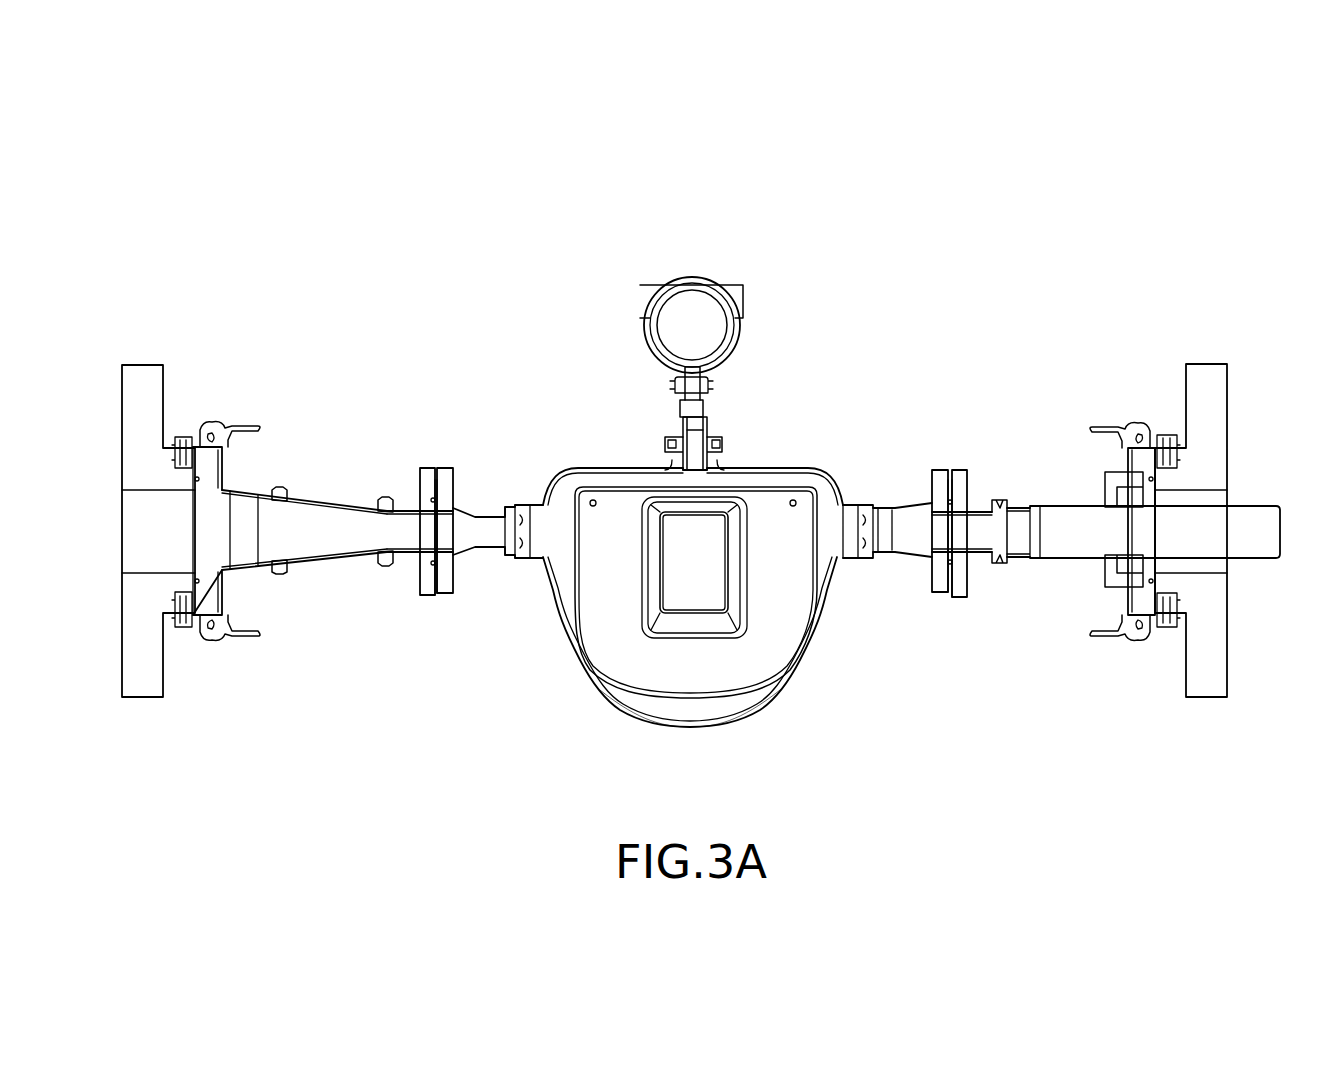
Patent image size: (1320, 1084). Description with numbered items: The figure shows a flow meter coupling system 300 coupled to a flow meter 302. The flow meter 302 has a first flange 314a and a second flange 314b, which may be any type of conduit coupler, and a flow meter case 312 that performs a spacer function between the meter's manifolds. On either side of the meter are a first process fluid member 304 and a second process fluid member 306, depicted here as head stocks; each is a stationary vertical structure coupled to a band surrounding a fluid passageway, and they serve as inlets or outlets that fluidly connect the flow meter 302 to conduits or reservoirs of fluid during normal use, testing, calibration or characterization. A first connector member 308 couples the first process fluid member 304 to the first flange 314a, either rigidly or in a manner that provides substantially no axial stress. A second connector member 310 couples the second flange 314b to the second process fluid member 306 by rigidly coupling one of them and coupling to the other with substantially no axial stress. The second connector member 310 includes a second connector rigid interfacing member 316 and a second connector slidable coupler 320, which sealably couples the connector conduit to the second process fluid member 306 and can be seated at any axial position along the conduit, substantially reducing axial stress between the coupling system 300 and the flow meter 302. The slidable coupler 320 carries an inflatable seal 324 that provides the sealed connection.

The flow meter coupling system 300 is at (227, 198).
The flow meter 302 is at (620, 467).
The first process fluid member 304 is at (146, 370).
The second process fluid member 306 is at (1197, 368).
The first connector member 308 is at (453, 378).
The second connector member 310 is at (1125, 373).
The flow meter case 312 is at (678, 728).
The first flange 314a is at (452, 490).
The second flange 314b is at (934, 490).
The second connector rigid interfacing member 316 is at (978, 548).
The second connector slidable coupler 320 is at (1110, 487).
The inflatable seal 324 is at (1125, 567).